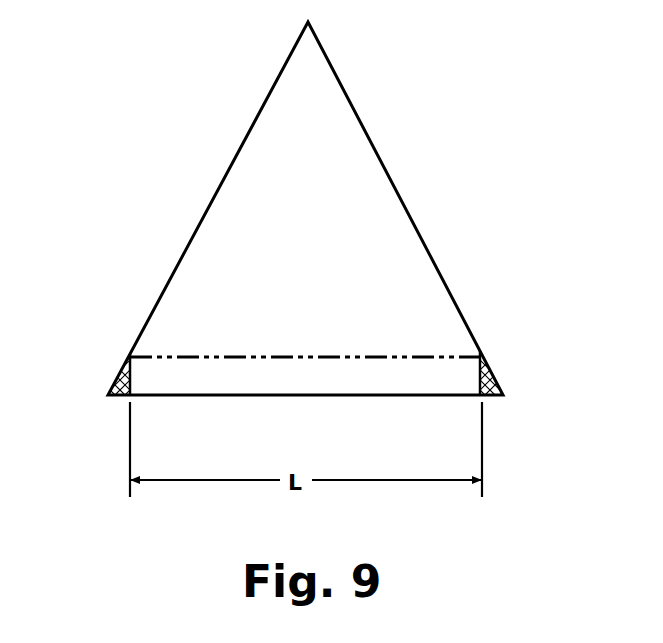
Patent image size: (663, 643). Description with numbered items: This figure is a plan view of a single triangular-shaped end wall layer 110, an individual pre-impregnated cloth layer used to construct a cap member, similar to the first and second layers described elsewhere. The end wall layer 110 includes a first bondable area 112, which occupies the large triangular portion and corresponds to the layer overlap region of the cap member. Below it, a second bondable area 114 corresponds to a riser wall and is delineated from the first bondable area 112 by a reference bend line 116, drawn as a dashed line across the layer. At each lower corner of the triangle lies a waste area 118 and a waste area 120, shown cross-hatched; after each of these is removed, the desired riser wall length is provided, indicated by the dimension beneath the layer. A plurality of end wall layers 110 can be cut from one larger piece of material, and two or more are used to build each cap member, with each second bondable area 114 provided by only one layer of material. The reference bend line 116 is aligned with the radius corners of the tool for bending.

The end wall layer 110 is at (326, 249).
The first bondable area 112 is at (400, 257).
The second bondable area 114 is at (210, 380).
The reference bend line 116 is at (432, 357).
The waste area 118 is at (497, 385).
The waste area 120 is at (118, 375).